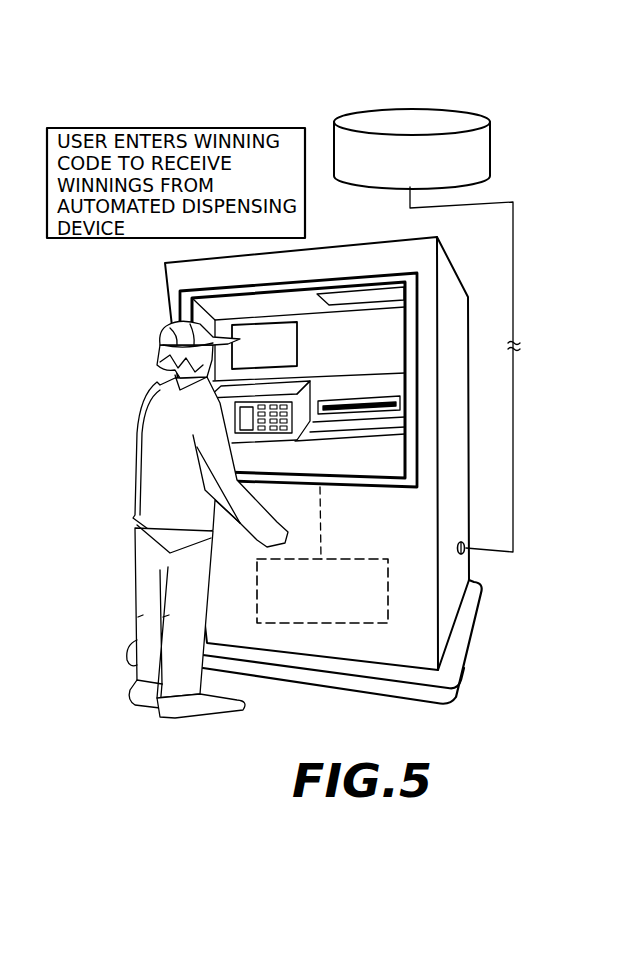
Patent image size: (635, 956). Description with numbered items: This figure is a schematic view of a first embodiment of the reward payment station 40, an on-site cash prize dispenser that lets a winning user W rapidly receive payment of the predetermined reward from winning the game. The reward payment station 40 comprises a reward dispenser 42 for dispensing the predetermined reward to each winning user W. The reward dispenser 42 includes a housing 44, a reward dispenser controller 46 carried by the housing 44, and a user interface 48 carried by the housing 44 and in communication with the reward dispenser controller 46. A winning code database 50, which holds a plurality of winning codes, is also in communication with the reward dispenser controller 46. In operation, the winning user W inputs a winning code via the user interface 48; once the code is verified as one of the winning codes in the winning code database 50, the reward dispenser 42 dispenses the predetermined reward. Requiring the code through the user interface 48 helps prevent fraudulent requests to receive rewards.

The reward payment station 40 is at (515, 178).
The reward dispenser 42 is at (413, 380).
The housing 44 is at (467, 498).
The reward dispenser controller 46 is at (388, 597).
The user interface 48 is at (405, 435).
The winning code database 50 is at (490, 118).
The winning user W is at (133, 516).